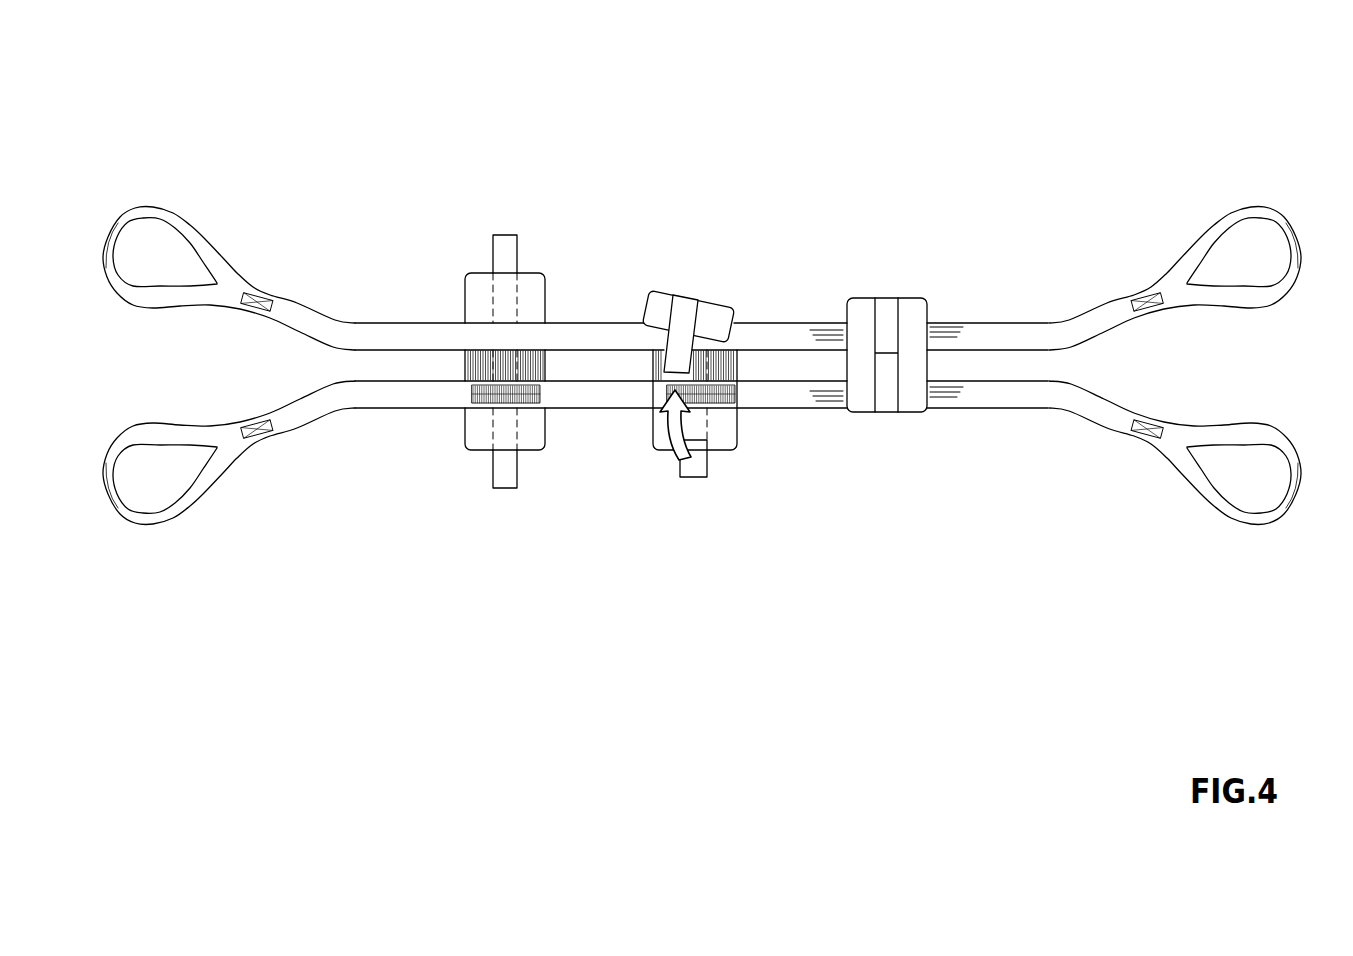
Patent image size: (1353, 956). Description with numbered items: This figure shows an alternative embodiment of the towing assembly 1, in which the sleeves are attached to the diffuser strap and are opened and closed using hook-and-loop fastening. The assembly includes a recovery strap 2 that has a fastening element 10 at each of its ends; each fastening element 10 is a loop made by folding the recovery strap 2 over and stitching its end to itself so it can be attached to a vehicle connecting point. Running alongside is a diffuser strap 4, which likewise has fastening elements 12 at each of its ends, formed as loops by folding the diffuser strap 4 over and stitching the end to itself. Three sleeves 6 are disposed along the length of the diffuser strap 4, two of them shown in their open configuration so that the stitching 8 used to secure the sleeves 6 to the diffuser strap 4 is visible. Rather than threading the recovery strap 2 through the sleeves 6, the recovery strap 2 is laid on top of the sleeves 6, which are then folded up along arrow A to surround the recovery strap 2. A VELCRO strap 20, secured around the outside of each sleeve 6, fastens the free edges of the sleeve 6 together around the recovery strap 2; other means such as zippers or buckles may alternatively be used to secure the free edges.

The towing assembly 1 is at (350, 107).
The recovery strap 2 is at (567, 335).
The diffuser strap 4 is at (642, 400).
The sleeves 6 is at (863, 298).
The stitching 8 is at (487, 395).
The fastening element 10 is at (190, 225).
The fastening elements 12 is at (163, 518).
The VELCRO strap 20 is at (500, 250).
The arrow A is at (673, 437).